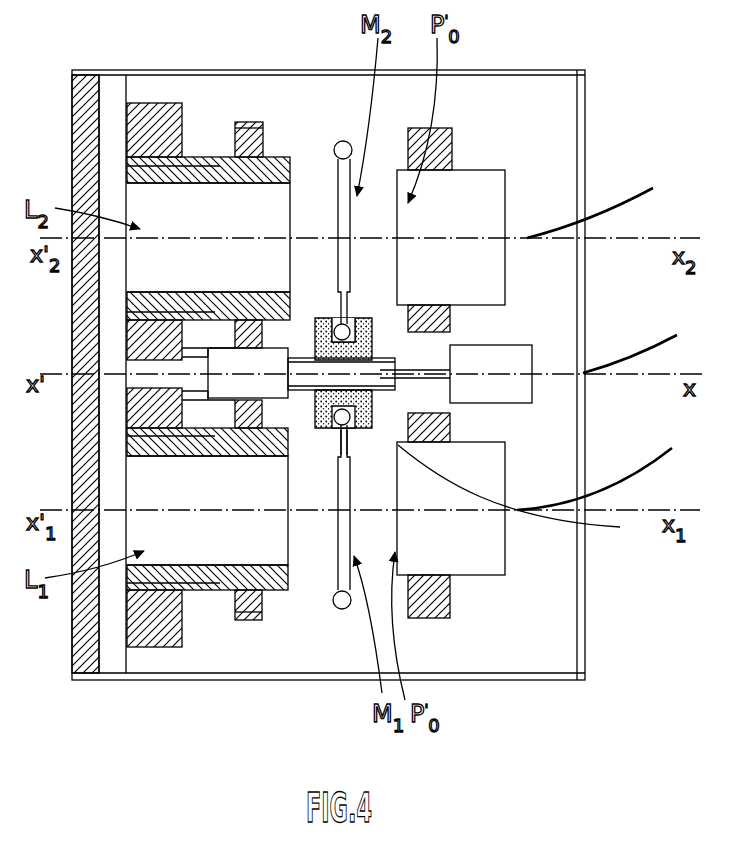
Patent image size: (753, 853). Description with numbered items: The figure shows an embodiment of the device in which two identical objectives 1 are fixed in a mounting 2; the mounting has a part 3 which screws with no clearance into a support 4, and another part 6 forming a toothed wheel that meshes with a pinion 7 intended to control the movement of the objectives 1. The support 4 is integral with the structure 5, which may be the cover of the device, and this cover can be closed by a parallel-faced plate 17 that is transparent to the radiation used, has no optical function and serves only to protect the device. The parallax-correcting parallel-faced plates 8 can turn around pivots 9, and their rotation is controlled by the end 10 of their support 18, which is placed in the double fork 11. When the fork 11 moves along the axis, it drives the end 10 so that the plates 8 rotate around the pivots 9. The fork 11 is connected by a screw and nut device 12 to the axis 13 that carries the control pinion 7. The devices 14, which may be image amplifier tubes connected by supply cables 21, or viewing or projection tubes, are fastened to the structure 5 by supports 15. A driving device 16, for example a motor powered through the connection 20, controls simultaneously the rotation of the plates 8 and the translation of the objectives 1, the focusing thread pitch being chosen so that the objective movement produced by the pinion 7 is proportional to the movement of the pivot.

The objectives 1 is at (155, 205).
The mounting 2 is at (232, 577).
The part of the mounting 3 is at (138, 613).
The support 4 is at (143, 410).
The structure 5 is at (140, 75).
The toothed wheel part 6 is at (250, 123).
The pinion 7 is at (249, 360).
The parallel-faced plates 8 is at (342, 187).
The pivots 9 is at (342, 141).
The end of the support 10 is at (330, 322).
The double fork 11 is at (530, 494).
The screw and nut device 12 is at (340, 219).
The axis 13 is at (430, 368).
The devices 14 is at (488, 180).
The supports 15 is at (435, 300).
The driving device 16 is at (515, 384).
The parallel-faced plate 17 is at (85, 115).
The support of the plates 18 is at (337, 437).
The connection 20 is at (648, 340).
The supply cables 21 is at (634, 188).